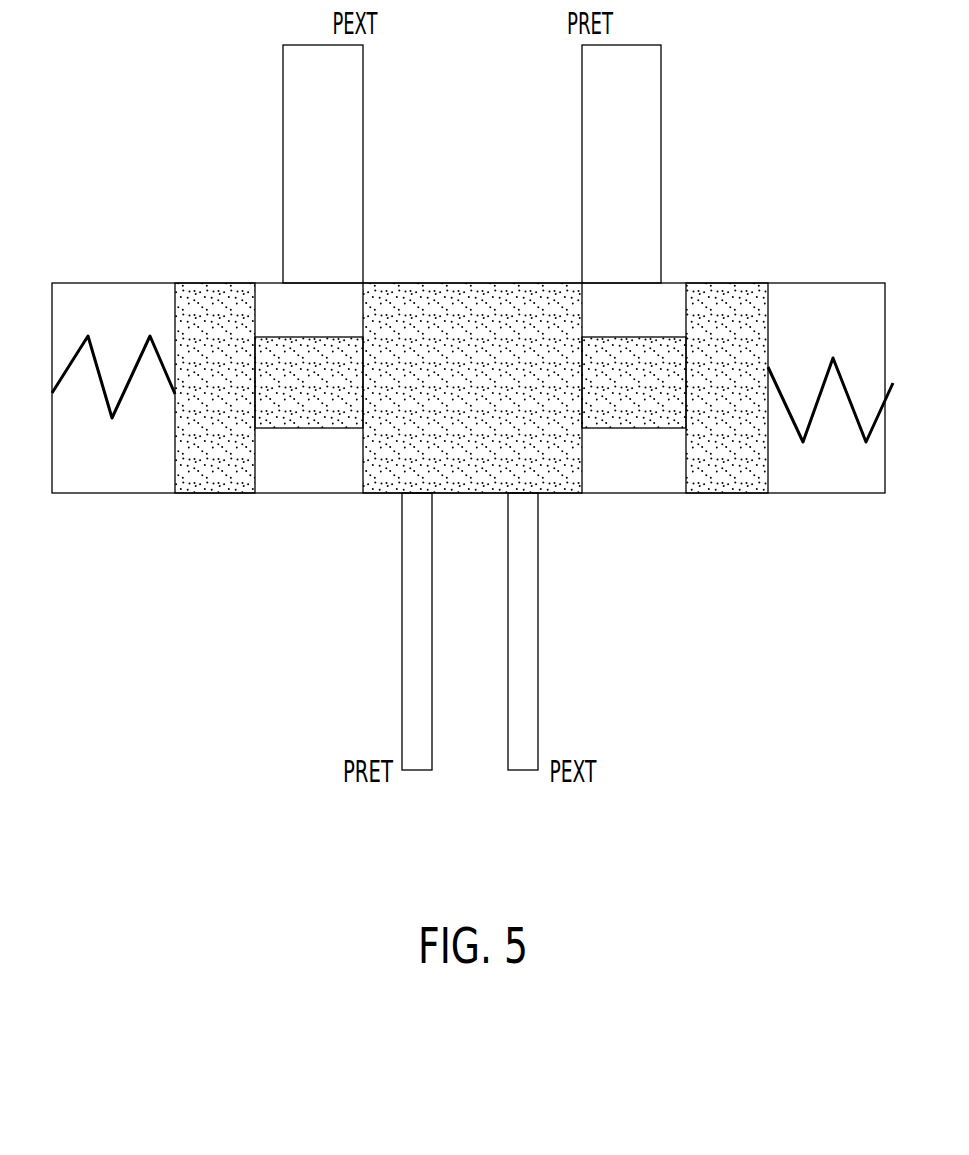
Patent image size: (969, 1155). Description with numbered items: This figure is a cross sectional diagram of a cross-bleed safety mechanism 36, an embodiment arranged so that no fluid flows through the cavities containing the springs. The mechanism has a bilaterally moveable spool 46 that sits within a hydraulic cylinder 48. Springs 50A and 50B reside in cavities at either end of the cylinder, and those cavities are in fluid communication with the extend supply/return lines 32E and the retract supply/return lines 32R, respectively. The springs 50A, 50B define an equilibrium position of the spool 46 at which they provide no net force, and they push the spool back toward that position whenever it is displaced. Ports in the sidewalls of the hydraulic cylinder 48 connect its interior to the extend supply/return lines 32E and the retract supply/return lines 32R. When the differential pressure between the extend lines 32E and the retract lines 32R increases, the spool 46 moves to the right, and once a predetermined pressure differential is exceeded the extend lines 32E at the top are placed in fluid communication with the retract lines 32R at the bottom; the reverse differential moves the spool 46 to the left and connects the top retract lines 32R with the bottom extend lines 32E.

The directional control valve 36 is at (753, 150).
The bilaterally moveable spool 46 is at (484, 397).
The hydraulic cylinder 48 is at (337, 493).
The extend supply/return lines 32E is at (358, 165).
The retract supply/return lines 32R is at (587, 200).
The spring 50A is at (98, 348).
The spring 50B is at (858, 432).